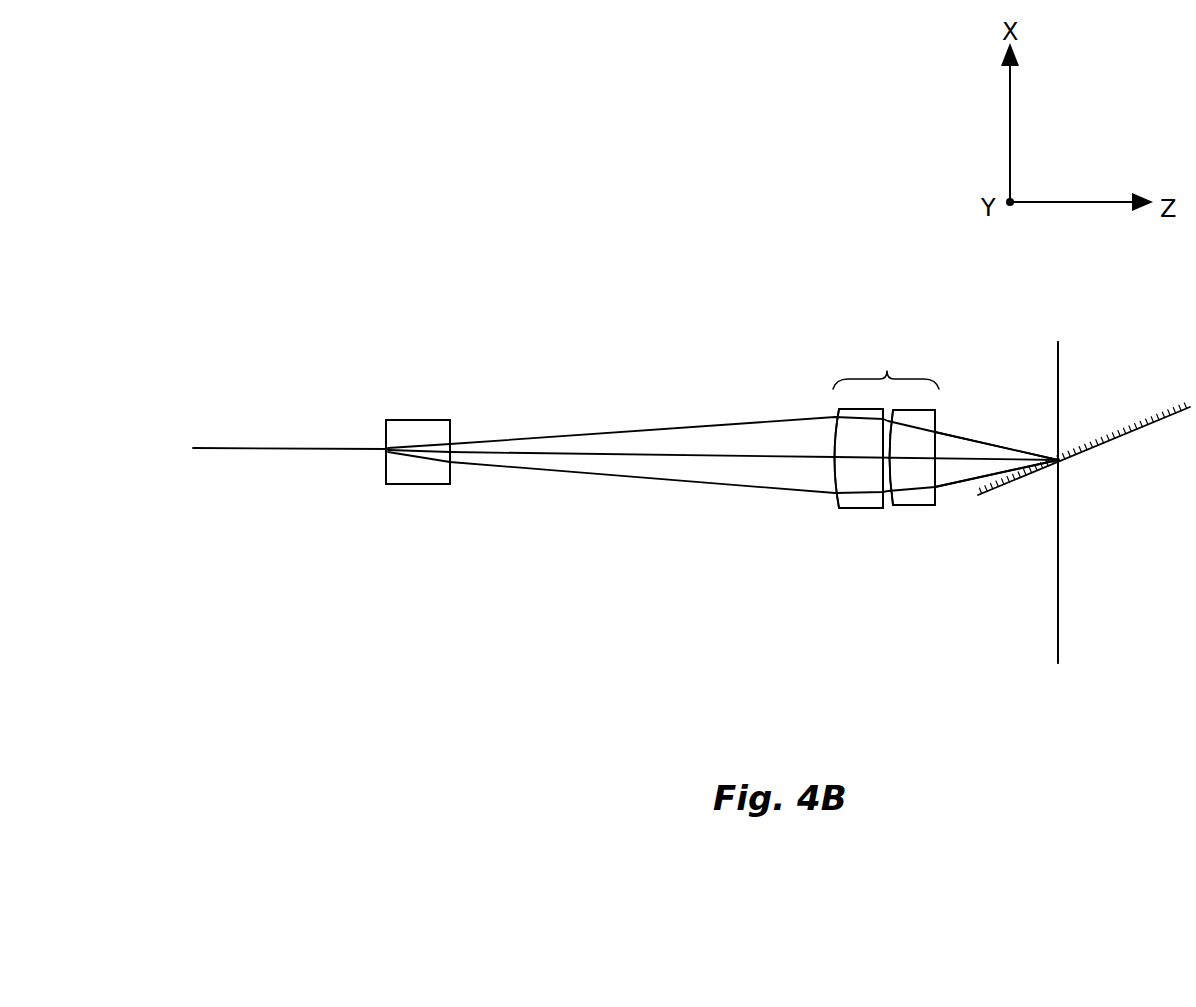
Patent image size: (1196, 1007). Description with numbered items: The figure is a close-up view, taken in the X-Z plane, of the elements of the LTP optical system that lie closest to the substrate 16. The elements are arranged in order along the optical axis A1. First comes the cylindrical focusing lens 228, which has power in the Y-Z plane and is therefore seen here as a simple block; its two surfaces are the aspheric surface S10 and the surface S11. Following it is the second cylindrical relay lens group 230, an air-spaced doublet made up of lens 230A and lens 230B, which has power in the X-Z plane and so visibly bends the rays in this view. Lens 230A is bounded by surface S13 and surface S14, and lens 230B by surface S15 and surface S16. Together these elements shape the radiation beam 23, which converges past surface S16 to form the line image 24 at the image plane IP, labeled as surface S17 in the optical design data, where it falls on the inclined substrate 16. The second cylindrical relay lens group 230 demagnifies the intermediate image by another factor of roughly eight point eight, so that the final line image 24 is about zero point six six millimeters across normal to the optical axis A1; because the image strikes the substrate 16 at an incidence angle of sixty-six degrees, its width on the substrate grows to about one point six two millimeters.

The optical axis A1 is at (238, 452).
The cylindrical focusing lens 228 is at (425, 420).
The surface S10 is at (386, 470).
The surface S11 is at (452, 474).
The second cylindrical relay lens group 230 is at (880, 408).
The lens 230A is at (862, 409).
The lens 230B is at (936, 410).
The surface S13 is at (833, 480).
The surface S14 is at (880, 483).
The surface S15 is at (900, 482).
The surface S16 is at (933, 497).
The radiation beam 23 is at (968, 435).
The substrate 16 is at (1110, 447).
The line image 24 is at (1067, 462).
The image plane IP is at (1060, 618).
The surface S17 is at (1060, 643).